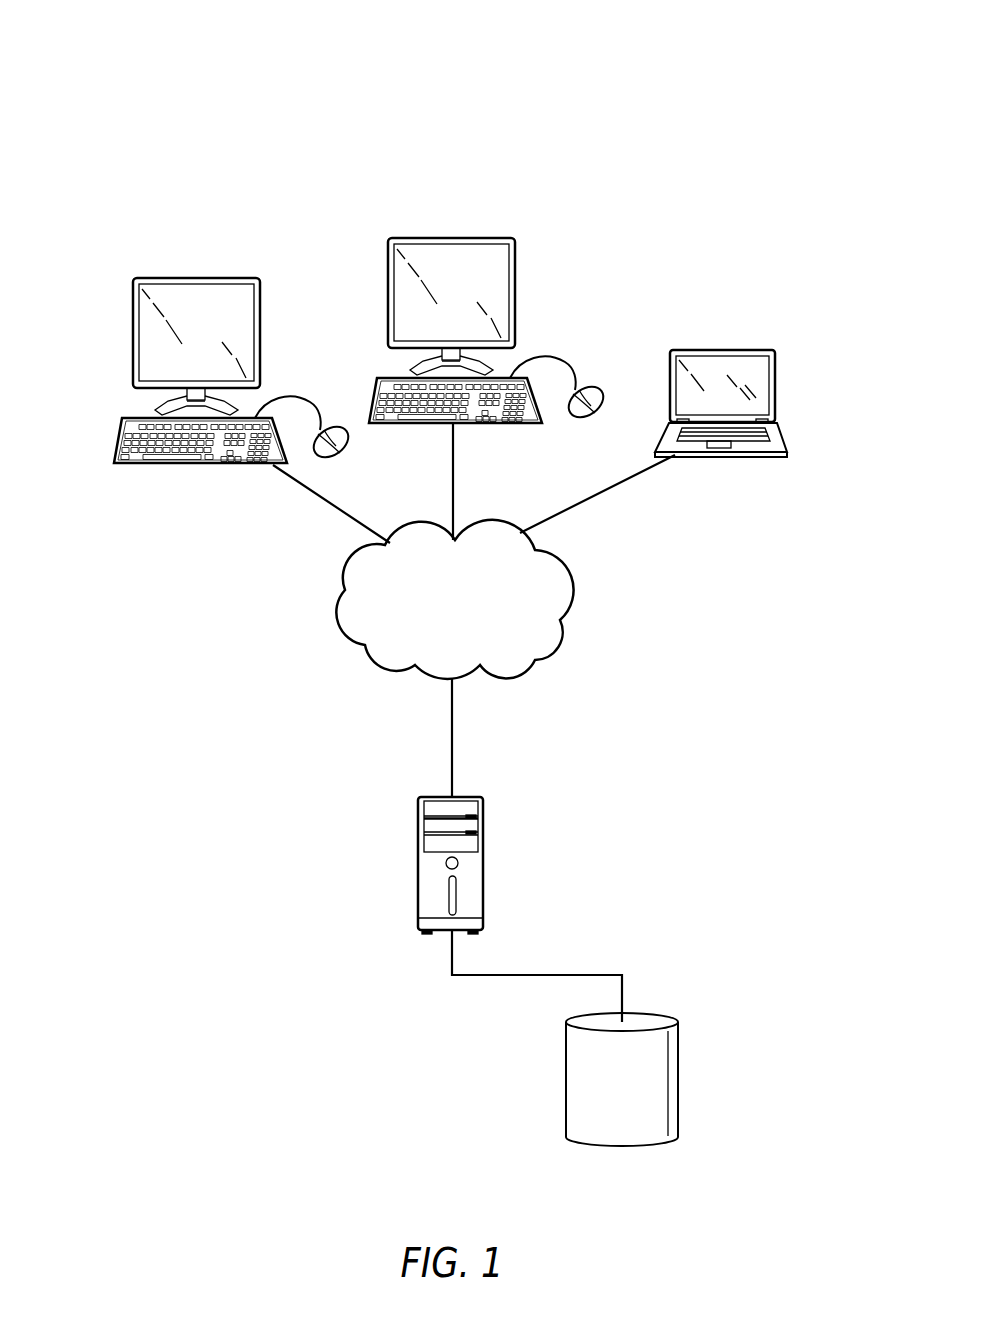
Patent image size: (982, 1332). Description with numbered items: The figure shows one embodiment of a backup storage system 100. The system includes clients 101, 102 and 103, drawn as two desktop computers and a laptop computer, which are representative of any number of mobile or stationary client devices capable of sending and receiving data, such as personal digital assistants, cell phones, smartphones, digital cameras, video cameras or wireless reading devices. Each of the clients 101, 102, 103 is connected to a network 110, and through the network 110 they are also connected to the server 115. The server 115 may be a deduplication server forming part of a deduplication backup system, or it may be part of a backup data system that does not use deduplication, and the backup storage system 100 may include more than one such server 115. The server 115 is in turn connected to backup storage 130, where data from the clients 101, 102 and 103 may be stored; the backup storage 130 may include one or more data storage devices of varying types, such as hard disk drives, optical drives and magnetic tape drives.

The backup storage system 100 is at (641, 78).
The client 101 is at (164, 256).
The client 102 is at (407, 220).
The client 103 is at (744, 338).
The network 110 is at (470, 624).
The server 115 is at (476, 783).
The backup storage 130 is at (643, 1127).